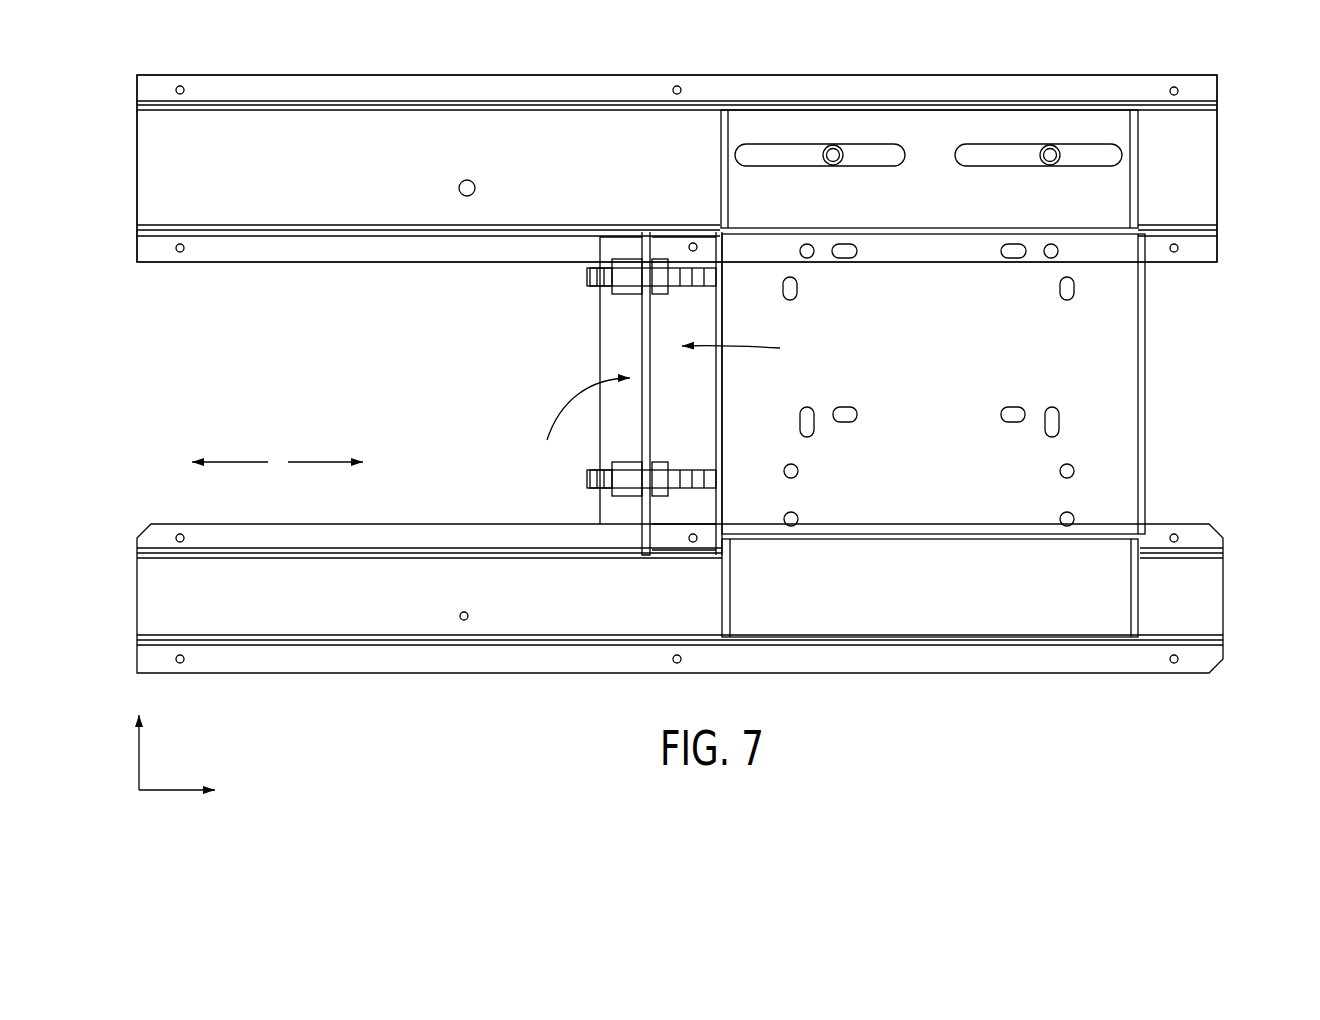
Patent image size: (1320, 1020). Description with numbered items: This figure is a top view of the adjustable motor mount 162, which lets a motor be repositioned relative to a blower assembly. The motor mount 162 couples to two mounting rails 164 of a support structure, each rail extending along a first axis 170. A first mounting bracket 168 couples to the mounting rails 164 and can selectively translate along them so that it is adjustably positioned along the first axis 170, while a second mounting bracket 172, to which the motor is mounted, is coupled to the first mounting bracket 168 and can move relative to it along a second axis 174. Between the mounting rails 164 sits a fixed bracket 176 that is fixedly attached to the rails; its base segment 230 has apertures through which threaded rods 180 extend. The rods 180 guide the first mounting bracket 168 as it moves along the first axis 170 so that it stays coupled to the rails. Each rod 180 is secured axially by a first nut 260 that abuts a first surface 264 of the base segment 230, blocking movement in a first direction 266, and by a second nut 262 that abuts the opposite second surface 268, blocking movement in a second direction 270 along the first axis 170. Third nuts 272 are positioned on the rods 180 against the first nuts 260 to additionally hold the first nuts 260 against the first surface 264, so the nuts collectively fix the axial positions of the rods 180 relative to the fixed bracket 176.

The adjustable motor mount 162 is at (1256, 159).
The mounting rails 164 is at (248, 248).
The first mounting bracket 168 is at (716, 152).
The first axis 170 is at (172, 790).
The second mounting bracket 172 is at (1178, 334).
The second axis 174 is at (137, 758).
The fixed bracket 176 is at (558, 370).
The rods 180 is at (690, 270).
The base segment 230 is at (645, 337).
The first nut 260 is at (640, 262).
The second nut 262 is at (660, 294).
The first surface 264 is at (572, 400).
The first direction 266 is at (320, 463).
The second surface 268 is at (763, 412).
The second direction 270 is at (236, 462).
The third nuts 272 is at (608, 280).